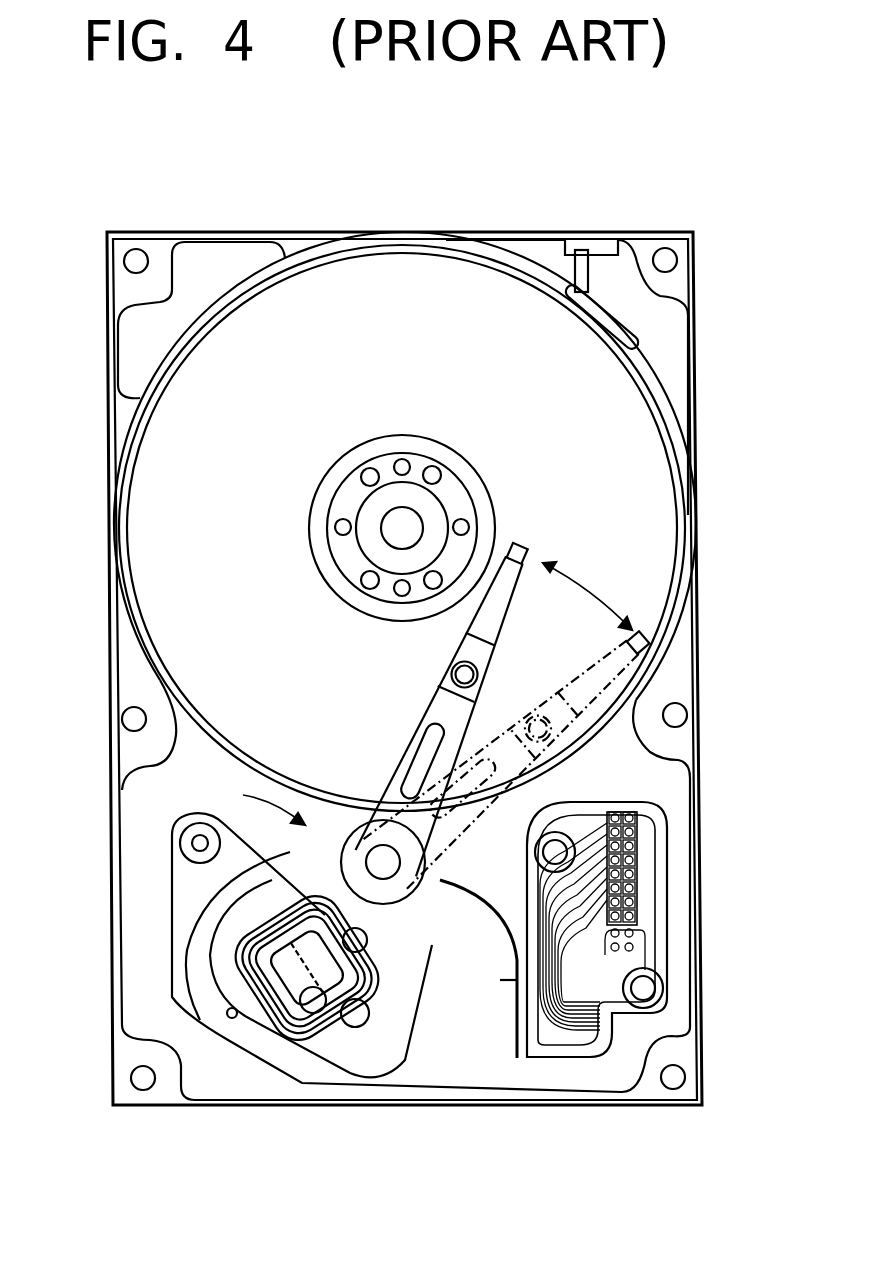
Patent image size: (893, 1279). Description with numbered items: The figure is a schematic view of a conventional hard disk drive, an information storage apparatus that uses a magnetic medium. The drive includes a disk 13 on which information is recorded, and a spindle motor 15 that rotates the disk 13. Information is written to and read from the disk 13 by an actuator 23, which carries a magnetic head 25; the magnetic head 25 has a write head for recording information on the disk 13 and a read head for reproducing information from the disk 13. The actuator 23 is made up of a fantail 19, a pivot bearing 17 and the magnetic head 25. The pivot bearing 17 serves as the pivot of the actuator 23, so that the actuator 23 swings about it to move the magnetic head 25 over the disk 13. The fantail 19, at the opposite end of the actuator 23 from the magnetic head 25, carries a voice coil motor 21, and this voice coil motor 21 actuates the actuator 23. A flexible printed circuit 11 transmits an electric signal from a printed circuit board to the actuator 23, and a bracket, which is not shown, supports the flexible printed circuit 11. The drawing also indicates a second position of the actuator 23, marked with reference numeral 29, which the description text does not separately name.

The flexible printed circuit 11 is at (512, 930).
The disk 13 is at (378, 275).
The spindle motor 15 is at (415, 492).
The pivot bearing 17 is at (383, 860).
The fantail 19 is at (273, 933).
The voice coil motor 21 is at (215, 983).
The actuator 23 is at (257, 800).
The magnetic head 25 is at (530, 550).
The actuator arm in outer position 29 is at (552, 738).